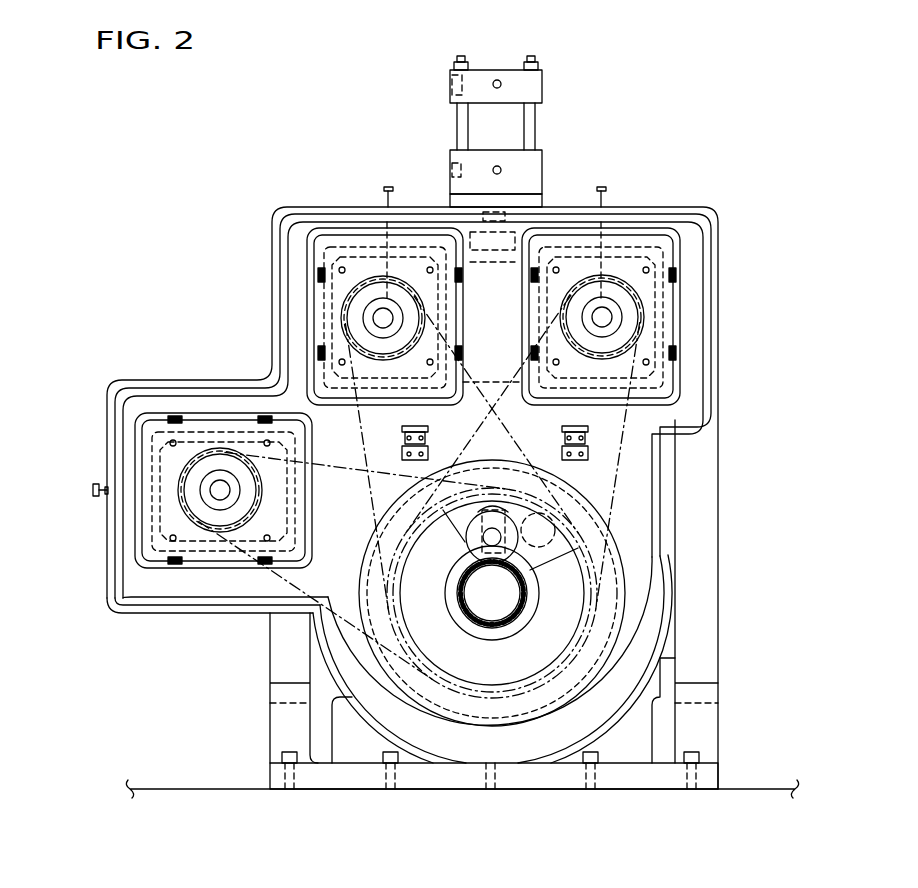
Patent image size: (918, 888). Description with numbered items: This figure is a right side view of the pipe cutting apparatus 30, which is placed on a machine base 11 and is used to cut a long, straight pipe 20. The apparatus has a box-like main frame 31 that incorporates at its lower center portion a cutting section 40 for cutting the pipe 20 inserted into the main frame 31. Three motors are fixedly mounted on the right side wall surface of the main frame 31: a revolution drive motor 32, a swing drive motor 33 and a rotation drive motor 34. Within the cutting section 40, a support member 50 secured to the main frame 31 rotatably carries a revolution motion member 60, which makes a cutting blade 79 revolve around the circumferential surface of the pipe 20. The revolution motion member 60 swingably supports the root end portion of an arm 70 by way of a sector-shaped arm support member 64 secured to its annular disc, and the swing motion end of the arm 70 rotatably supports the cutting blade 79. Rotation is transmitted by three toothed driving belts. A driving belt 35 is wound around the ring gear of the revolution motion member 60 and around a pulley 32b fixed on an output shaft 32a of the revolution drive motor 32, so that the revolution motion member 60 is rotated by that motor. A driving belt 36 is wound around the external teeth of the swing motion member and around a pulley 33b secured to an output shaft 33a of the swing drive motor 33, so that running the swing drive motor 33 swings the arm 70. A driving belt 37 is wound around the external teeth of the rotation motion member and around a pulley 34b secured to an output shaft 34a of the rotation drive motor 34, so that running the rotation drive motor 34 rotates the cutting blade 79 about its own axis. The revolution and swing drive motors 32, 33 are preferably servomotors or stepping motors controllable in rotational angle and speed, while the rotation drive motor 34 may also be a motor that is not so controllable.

The machine base 11 is at (765, 789).
The pipe 20 is at (490, 629).
The pipe cutting apparatus 30 is at (562, 184).
The main frame 31 is at (705, 457).
The revolution drive motor 32 is at (210, 422).
The output shaft 32a is at (215, 487).
The pulley 32b is at (207, 478).
The swing drive motor 33 is at (315, 302).
The output shaft 33a is at (337, 248).
The pulley 33b is at (384, 312).
The rotation drive motor 34 is at (622, 245).
The output shaft 34a is at (608, 317).
The pulley 34b is at (626, 300).
The driving belt 35 is at (335, 610).
The driving belt 36 is at (362, 440).
The driving belt 37 is at (621, 443).
The cutting section 40 is at (478, 731).
The support member 50 is at (522, 722).
The revolution motion member 60 is at (572, 606).
The arm support member 64 is at (556, 546).
The arm 70 is at (496, 485).
The cutting blade 79 is at (467, 541).